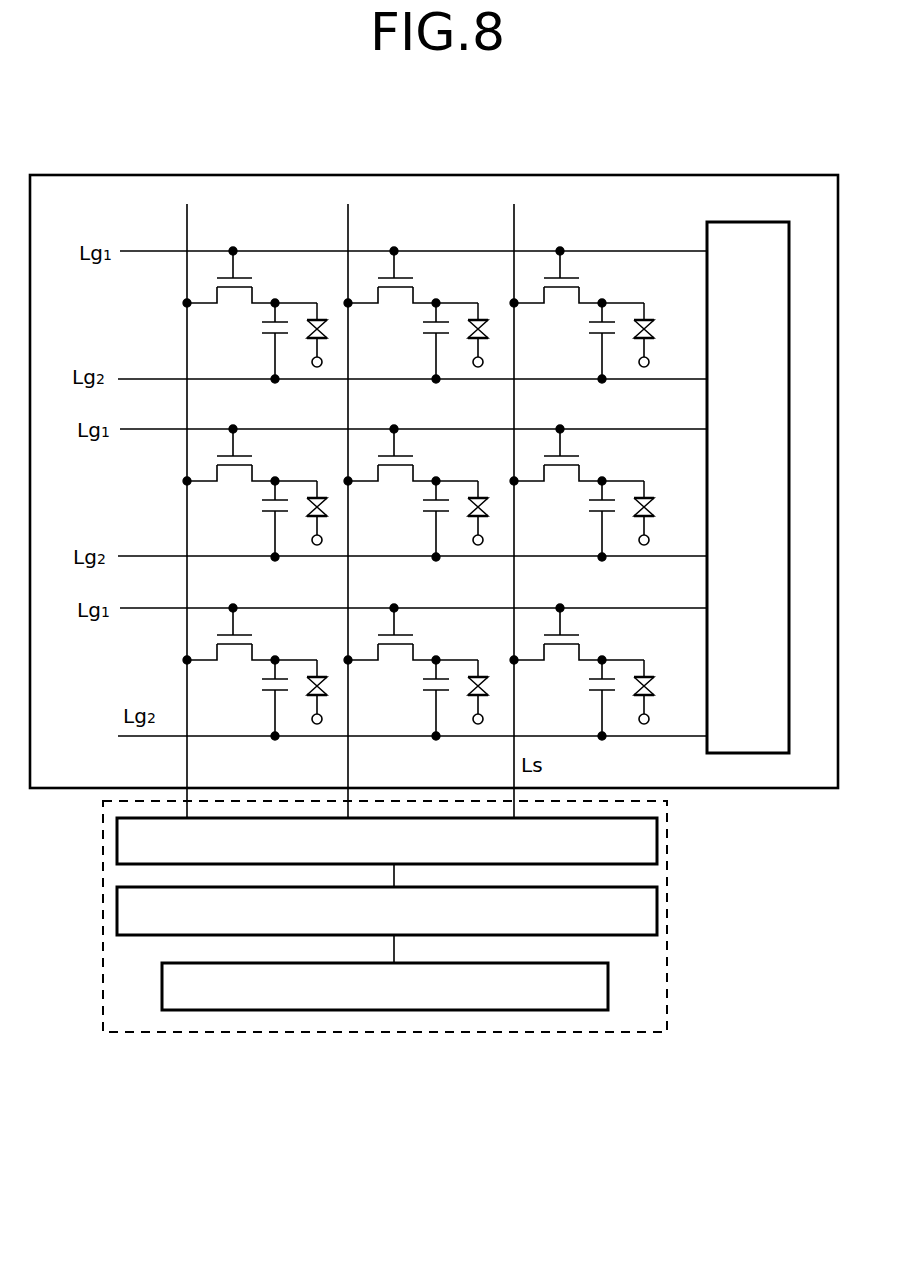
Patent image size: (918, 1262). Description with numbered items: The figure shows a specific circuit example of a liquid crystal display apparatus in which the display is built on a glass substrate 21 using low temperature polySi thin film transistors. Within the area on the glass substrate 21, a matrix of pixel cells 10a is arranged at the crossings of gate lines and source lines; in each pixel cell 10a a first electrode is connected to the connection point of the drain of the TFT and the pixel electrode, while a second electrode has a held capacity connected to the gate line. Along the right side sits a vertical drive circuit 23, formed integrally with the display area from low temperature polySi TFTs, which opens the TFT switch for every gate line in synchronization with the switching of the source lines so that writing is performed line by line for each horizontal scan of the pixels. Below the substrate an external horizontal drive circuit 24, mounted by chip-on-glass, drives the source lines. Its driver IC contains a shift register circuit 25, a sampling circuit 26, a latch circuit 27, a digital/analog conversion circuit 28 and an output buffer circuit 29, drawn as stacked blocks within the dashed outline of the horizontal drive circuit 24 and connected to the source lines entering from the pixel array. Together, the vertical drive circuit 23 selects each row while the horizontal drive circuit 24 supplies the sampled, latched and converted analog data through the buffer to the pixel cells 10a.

The glass substrate 21 is at (598, 184).
The vertical drive circuit 23 is at (790, 441).
The horizontal drive circuit 24 is at (437, 958).
The shift register circuit 25 is at (608, 983).
The sampling circuit 26 is at (444, 911).
The latch circuit 27 is at (645, 906).
The digital/analog conversion circuit 28 is at (444, 841).
The output buffer circuit 29 is at (645, 838).
The pixel cell 10a is at (259, 307).